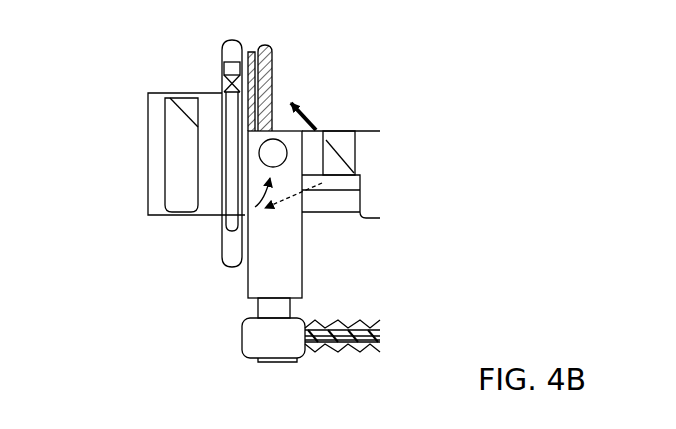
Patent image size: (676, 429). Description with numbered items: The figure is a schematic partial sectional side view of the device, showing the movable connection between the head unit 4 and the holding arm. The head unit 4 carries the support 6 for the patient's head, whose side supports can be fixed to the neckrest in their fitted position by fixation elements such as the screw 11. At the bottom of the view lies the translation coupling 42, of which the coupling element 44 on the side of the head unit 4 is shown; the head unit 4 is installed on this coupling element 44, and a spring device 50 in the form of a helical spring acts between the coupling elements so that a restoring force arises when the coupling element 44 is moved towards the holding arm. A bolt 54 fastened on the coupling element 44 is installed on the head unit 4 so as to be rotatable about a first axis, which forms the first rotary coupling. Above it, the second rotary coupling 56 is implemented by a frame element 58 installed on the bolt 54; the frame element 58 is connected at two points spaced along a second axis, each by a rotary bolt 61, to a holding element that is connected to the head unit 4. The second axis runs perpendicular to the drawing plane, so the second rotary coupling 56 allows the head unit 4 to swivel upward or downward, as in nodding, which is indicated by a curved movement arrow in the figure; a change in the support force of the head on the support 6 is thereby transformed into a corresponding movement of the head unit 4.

The support 6 is at (120, 124).
The screw 11 is at (222, 68).
The second rotary coupling 56 is at (248, 198).
The rotary bolt 61 is at (275, 148).
The frame element 58 is at (285, 252).
The head unit 4 is at (315, 88).
The bolt 54 is at (268, 308).
The coupling element 44 is at (258, 338).
The spring device 50 is at (330, 326).
The translation coupling 42 is at (351, 358).